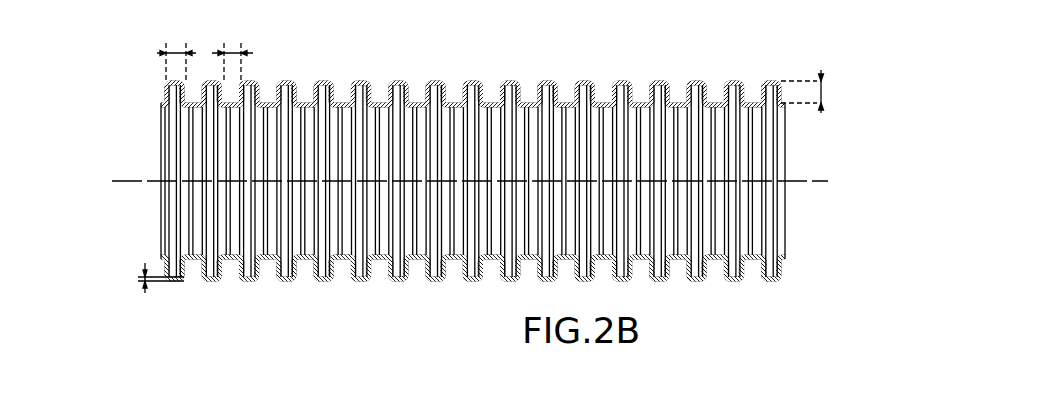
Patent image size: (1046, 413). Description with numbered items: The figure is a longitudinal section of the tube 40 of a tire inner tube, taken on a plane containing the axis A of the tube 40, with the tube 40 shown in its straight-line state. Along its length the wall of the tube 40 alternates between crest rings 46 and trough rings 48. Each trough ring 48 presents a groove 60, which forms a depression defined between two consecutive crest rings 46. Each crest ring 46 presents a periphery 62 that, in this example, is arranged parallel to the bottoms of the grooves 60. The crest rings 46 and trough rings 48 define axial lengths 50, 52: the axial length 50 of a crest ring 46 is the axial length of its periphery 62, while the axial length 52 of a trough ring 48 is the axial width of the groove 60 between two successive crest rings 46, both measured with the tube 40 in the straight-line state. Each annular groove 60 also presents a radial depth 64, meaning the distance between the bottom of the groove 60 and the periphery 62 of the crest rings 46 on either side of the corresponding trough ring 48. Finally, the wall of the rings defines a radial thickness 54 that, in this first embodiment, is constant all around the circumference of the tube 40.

The tube 40 is at (122, 57).
The crest ring 46 is at (735, 82).
The trough ring 48 is at (637, 95).
The axial length of the crest ring 50 is at (172, 52).
The axial length of the trough ring 52 is at (228, 52).
The radial thickness 54 is at (143, 292).
The groove 60 is at (753, 97).
The periphery 62 is at (772, 80).
The radial depth 64 is at (823, 90).
The axis A is at (479, 182).